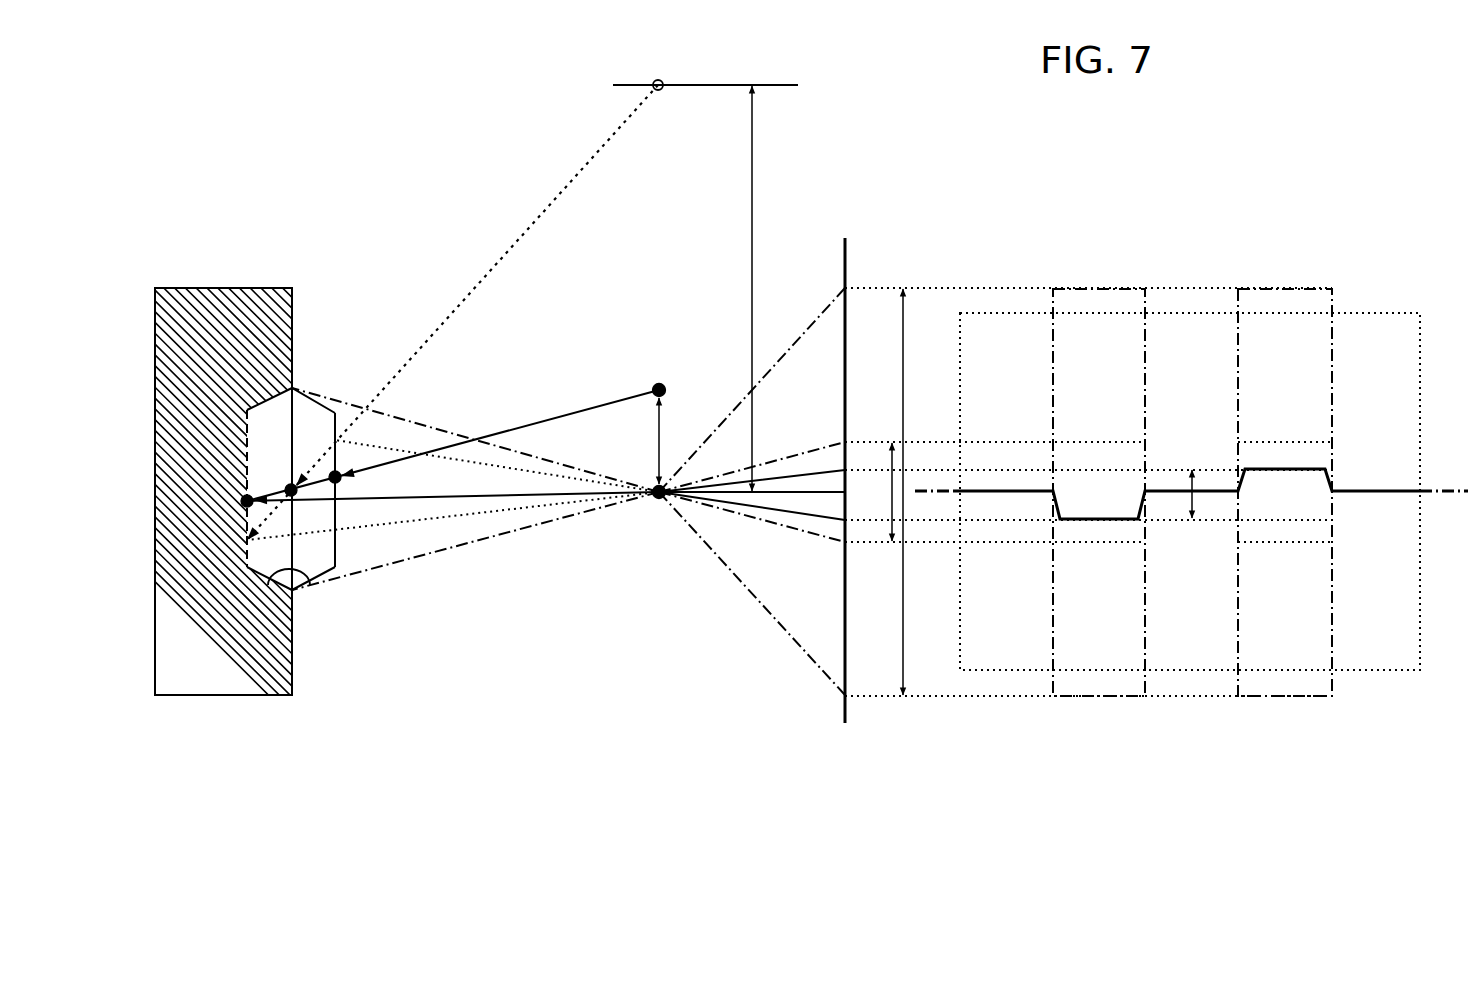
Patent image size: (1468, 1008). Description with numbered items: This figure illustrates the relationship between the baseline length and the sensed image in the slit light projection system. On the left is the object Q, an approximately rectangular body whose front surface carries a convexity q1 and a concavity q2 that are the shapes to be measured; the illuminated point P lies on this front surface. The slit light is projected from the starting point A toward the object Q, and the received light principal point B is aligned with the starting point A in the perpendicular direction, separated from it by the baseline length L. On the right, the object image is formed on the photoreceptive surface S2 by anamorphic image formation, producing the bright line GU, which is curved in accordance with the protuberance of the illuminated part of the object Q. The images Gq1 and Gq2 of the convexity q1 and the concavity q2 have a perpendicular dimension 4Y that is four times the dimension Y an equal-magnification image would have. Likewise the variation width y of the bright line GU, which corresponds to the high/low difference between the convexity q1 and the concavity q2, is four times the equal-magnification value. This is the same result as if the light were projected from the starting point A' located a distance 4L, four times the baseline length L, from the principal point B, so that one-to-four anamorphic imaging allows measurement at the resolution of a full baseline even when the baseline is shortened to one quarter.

The object Q is at (222, 289).
The point / prism element on object P is at (291, 489).
The convexity q1 is at (330, 410).
The concavity q2 is at (310, 585).
The starting point A is at (658, 374).
The starting point separated by four times the baseline length A' is at (705, 68).
The received light principal point B is at (658, 511).
The baseline length L is at (659, 440).
The four times the baseline length 4L is at (726, 288).
The photoreceptive surface S2 is at (846, 253).
The dimension in the perpendicular direction of the images 4Y is at (881, 492).
The dimension of an image formed by equal magnification Y is at (892, 494).
The variation width of the bright line y is at (1192, 498).
The image of the convexity Gq1 is at (1098, 289).
The image of the concavity Gq2 is at (1284, 289).
The bright line GU is at (1358, 490).